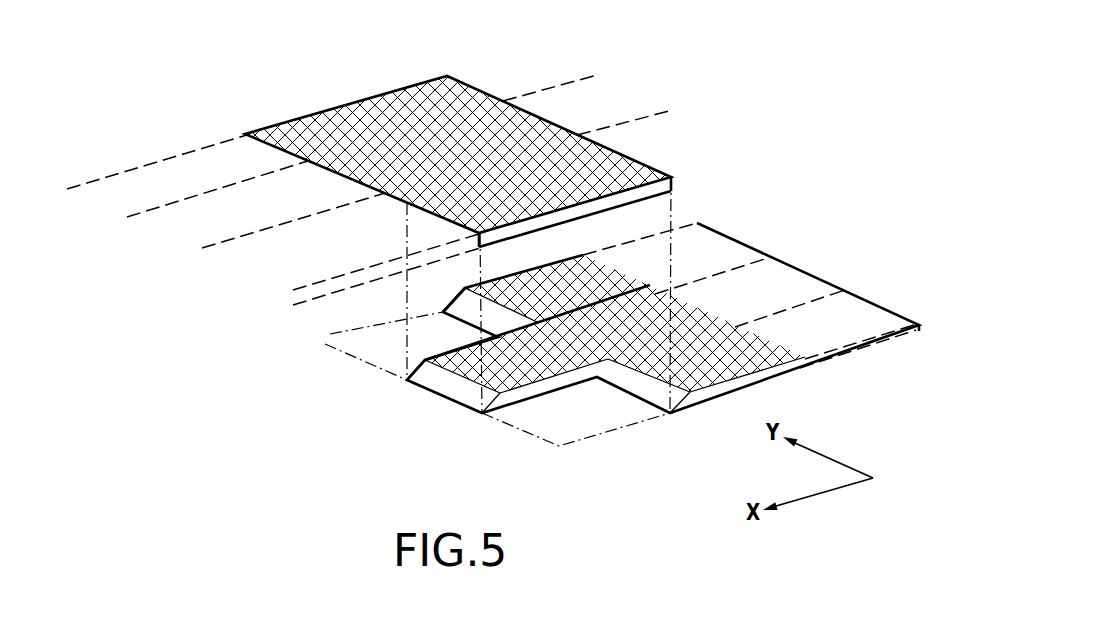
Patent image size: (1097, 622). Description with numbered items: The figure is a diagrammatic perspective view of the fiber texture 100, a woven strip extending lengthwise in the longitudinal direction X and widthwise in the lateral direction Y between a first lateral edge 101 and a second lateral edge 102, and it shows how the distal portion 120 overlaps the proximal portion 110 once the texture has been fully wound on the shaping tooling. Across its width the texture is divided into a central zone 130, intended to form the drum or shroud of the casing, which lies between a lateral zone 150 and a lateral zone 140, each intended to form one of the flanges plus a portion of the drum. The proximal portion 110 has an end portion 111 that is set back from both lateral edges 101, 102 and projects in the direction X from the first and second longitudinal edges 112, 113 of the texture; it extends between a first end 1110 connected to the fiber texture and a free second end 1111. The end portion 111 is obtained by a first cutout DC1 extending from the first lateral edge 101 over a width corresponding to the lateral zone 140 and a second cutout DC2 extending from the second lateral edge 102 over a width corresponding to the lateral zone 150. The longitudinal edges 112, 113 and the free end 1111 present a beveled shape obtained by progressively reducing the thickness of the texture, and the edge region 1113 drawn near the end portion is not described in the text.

The fiber texture 100 is at (762, 56).
The distal portion 120 is at (295, 88).
The proximal portion 110 is at (595, 419).
The first lateral edge 101 is at (660, 194).
The second lateral edge 102 is at (405, 88).
The lateral zone 150 is at (222, 180).
The central zone 130 is at (285, 215).
The lateral zone 140 is at (357, 256).
The end portion 111 is at (417, 368).
The second longitudinal edge 113 is at (464, 303).
The first longitudinal edge 112 is at (664, 400).
The side edge of stem 1113 is at (448, 350).
The free second end 1111 is at (457, 393).
The first end 1110 is at (543, 387).
The first cutout DC1 is at (550, 444).
The second cutout DC2 is at (328, 342).